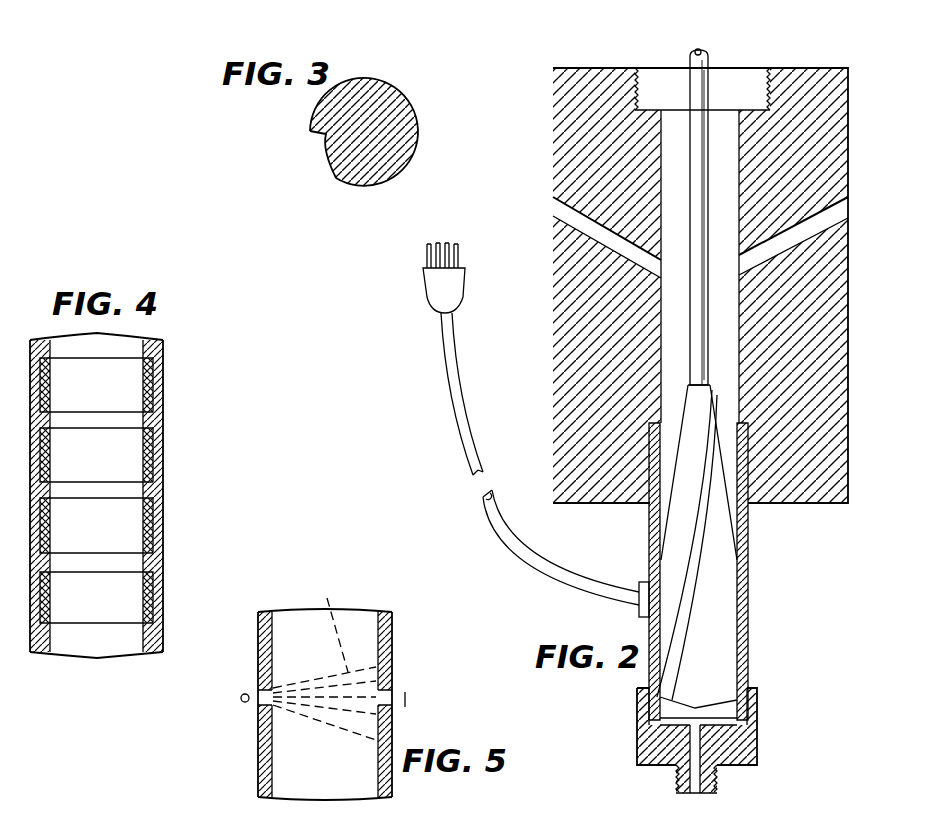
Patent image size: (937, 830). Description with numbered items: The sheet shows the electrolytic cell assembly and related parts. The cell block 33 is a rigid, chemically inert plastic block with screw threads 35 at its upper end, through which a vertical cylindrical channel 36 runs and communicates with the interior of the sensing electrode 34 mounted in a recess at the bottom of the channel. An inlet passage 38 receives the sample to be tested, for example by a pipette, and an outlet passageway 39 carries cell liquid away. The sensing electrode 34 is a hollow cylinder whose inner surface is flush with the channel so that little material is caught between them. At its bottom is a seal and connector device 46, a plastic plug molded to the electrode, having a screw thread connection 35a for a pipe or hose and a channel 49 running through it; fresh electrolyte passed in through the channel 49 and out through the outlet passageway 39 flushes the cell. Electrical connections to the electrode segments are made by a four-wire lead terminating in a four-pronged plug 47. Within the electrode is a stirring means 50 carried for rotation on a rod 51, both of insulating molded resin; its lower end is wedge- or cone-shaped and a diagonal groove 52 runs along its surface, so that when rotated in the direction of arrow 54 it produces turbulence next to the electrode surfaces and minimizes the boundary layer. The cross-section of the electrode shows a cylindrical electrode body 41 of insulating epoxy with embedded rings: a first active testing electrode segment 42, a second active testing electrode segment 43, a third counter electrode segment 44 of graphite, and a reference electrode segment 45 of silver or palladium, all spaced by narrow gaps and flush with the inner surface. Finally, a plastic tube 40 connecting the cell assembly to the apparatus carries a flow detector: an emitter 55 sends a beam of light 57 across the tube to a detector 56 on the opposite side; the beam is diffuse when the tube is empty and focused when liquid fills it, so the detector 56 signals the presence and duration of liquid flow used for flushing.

In FIG. 2, the cell block 33 is at (551, 362).
In FIG. 2, the screw threads 35 is at (767, 86).
In FIG. 2, the screw thread connection 35a is at (718, 781).
In FIG. 2, the vertical channel 36 is at (738, 190).
In FIG. 2, the inlet passage 38 is at (842, 214).
In FIG. 2, the outlet passageway 39 is at (558, 212).
In FIG. 2, the rod 51 is at (690, 62).
In FIG. 2, the sensing electrode 34 is at (749, 616).
In FIG. 2, the seal and connector device 46 is at (757, 738).
In FIG. 2, the channel 49 is at (690, 778).
In FIG. 2, the cable with plug 47 is at (548, 577).
In FIG. 3, the stirring means 50 is at (358, 178).
In FIG. 3, the diagonal groove 52 is at (324, 137).
In FIG. 3, the arrow 54 is at (305, 100).
In FIG. 4, the electrode body 41 is at (158, 348).
In FIG. 4, the first active testing electrode segment 42 is at (152, 396).
In FIG. 4, the reference electrode segment 45 is at (152, 466).
In FIG. 4, the second active testing electrode segment 43 is at (152, 536).
In FIG. 4, the third counter electrode segment 44 is at (152, 604).
In FIG. 5, the plastic tube 40 is at (393, 627).
In FIG. 5, the beam of light 57 is at (324, 658).
In FIG. 5, the emitter 55 is at (243, 694).
In FIG. 5, the detector 56 is at (406, 700).